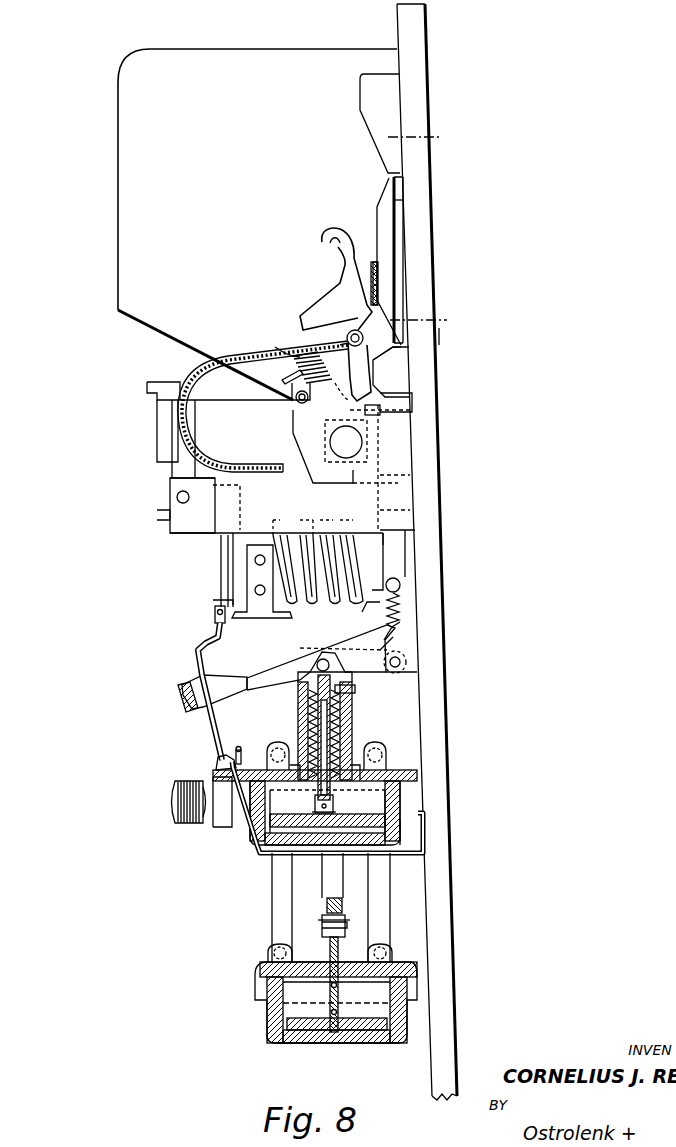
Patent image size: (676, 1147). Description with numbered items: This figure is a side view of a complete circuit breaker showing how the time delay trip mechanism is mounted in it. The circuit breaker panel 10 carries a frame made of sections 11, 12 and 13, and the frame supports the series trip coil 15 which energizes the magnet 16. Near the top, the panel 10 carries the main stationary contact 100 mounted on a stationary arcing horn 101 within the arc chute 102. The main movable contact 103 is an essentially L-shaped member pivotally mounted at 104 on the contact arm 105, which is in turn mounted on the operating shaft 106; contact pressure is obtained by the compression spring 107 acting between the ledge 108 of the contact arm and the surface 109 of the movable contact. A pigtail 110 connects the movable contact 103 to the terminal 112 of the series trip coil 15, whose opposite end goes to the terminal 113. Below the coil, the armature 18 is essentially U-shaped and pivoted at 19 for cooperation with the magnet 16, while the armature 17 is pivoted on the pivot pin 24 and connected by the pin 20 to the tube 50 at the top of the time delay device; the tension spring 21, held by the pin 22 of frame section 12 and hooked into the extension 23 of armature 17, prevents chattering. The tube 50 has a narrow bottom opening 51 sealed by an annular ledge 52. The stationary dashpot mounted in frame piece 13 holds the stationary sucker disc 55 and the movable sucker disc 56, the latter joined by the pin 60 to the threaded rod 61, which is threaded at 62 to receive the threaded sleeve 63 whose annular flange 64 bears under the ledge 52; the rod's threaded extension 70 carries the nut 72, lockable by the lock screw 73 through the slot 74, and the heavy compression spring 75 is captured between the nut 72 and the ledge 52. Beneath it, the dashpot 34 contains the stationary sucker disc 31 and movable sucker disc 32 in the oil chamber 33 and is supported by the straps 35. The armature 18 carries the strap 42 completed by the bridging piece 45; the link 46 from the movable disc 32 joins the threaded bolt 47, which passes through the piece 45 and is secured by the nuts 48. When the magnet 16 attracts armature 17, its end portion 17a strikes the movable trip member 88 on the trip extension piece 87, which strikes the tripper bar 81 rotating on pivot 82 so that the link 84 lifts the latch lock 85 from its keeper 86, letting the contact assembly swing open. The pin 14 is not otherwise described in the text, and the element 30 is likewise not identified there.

The circuit breaker panel 10 is at (427, 447).
The frame section 11 is at (395, 431).
The frame section 12 is at (400, 562).
The frame section 13 is at (398, 838).
The pin 14 is at (217, 623).
The series trip coil 15 is at (360, 556).
The magnet 16 is at (300, 613).
The armature 17 is at (352, 645).
The end portion 17a is at (258, 680).
The armature 18 is at (217, 683).
The pivot 19 is at (400, 660).
The pin 20 is at (322, 657).
The tension spring 21 is at (398, 603).
The pin 22 is at (398, 588).
The extension 23 is at (396, 626).
The pivot pin 24 is at (405, 632).
The lower casing 30 is at (283, 1040).
The stationary sucker disc 31 is at (392, 1032).
The movable sucker disc 32 is at (392, 1020).
The oil chamber 33 is at (295, 1016).
The dashpot 34 is at (290, 1006).
The straps 35 is at (382, 891).
The strap 42 is at (330, 896).
The bridging piece 45 is at (350, 919).
The link 46 is at (345, 998).
The threaded bolt 47 is at (325, 972).
The nuts 48 is at (330, 930).
The tube 50 is at (299, 723).
The opening 51 is at (400, 766).
The annular ledge 52 is at (395, 775).
The stationary sucker disc 55 is at (380, 818).
The movable sucker disc 56 is at (380, 812).
The pin 60 is at (390, 796).
The threaded rod 61 is at (360, 714).
The threaded lower end 62 is at (300, 745).
The threaded sleeve 63 is at (300, 793).
The annular flange 64 is at (318, 805).
The threaded extension 70 is at (318, 695).
The nut 72 is at (385, 673).
The lock screw 73 is at (365, 688).
The slot 74 is at (355, 700).
The compression spring 75 is at (352, 732).
The tripper bar 81 is at (213, 517).
The pivot 82 is at (176, 497).
The link 84 is at (225, 443).
The latch lock 85 is at (172, 385).
The keeper 86 is at (157, 401).
The trip extension piece 87 is at (225, 612).
The movable trip member 88 is at (232, 560).
The main stationary contact 100 is at (404, 288).
The stationary arcing horn 101 is at (400, 213).
The arc chute 102 is at (240, 75).
The main movable contact 103 is at (338, 258).
The pivot 104 is at (440, 336).
The contact arm 105 is at (448, 375).
The operating shaft 106 is at (350, 447).
The compression spring 107 is at (300, 362).
The ledge 108 is at (295, 410).
The surface 109 is at (300, 348).
The pigtail 110 is at (170, 433).
The terminal 112 is at (182, 468).
The terminal 113 is at (400, 495).